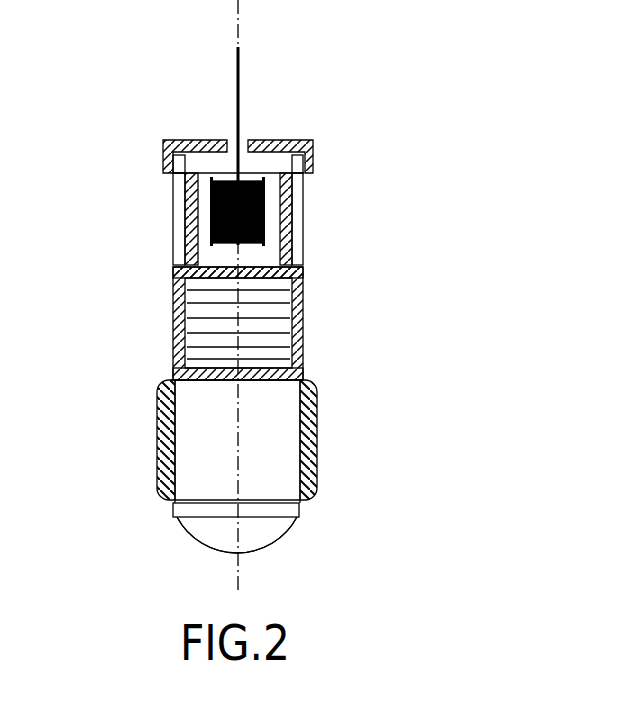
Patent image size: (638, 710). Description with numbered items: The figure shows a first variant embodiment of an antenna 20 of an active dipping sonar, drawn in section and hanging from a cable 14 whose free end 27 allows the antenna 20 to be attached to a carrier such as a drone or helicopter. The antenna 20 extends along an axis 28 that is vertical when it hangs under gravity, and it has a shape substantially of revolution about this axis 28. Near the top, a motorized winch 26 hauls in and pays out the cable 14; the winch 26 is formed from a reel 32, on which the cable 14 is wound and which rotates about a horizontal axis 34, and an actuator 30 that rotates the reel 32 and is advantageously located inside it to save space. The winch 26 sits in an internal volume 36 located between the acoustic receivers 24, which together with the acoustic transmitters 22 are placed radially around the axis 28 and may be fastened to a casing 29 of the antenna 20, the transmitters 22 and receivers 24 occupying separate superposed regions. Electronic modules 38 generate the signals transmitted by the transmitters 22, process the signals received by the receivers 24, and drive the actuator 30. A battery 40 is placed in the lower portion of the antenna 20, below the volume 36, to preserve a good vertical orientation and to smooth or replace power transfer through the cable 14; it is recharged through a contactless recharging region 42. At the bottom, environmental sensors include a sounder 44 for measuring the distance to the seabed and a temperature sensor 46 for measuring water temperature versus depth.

The antenna 20 is at (452, 208).
The free end 27 is at (238, 10).
The cable 14 is at (238, 85).
The reel 32 is at (175, 229).
The actuator 30 is at (203, 197).
The acoustic receivers 24 is at (296, 218).
The internal volume 36 is at (262, 253).
The motorized winch 26 is at (208, 208).
The horizontal axis 34 is at (272, 210).
The casing 29 is at (177, 255).
The electronic modules 38 is at (257, 325).
The axis 28 is at (237, 421).
The acoustic transmitters 22 is at (318, 432).
The battery 40 is at (283, 474).
The recharging region 42 is at (300, 510).
The temperature sensor 46 is at (273, 530).
The sounder 44 is at (210, 525).